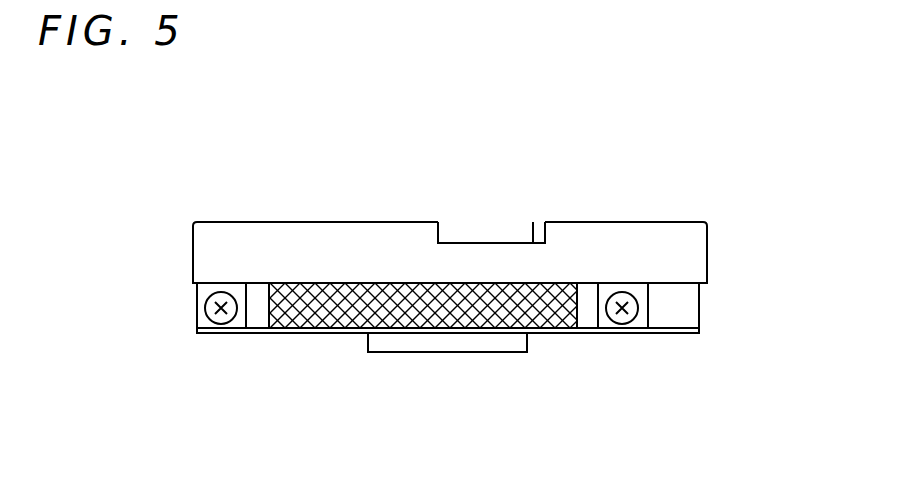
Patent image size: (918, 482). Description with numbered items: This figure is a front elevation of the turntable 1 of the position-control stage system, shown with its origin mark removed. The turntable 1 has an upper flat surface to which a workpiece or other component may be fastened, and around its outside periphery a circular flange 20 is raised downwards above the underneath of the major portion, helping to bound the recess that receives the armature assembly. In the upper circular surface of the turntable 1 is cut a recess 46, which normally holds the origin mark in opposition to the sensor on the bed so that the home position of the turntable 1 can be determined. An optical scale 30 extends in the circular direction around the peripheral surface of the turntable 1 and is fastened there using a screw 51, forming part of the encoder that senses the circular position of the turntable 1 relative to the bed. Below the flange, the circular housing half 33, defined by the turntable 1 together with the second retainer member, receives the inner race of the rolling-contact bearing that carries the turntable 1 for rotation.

The turntable 1 is at (330, 243).
The recess 46 is at (480, 243).
The circular flange 20 is at (685, 313).
The optical scale 30 is at (335, 310).
The circular housing half 33 is at (530, 343).
The screw 51 is at (623, 322).